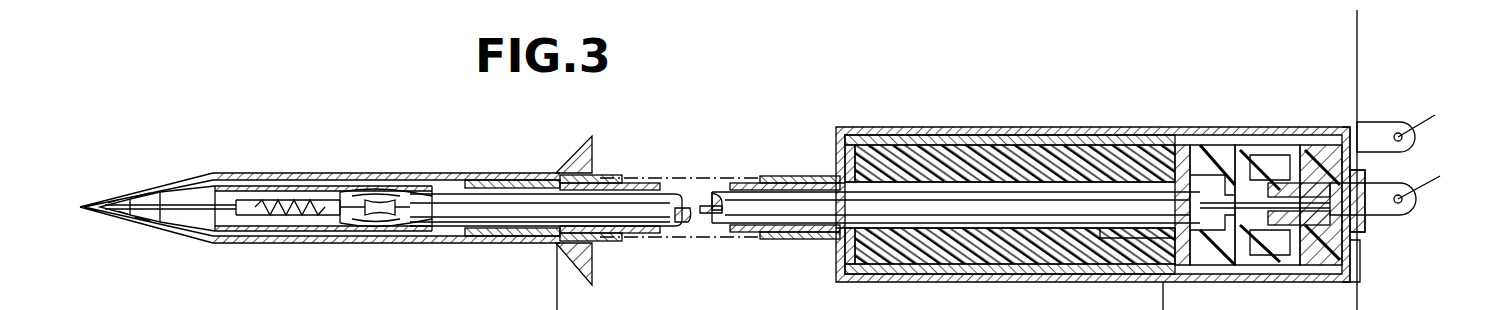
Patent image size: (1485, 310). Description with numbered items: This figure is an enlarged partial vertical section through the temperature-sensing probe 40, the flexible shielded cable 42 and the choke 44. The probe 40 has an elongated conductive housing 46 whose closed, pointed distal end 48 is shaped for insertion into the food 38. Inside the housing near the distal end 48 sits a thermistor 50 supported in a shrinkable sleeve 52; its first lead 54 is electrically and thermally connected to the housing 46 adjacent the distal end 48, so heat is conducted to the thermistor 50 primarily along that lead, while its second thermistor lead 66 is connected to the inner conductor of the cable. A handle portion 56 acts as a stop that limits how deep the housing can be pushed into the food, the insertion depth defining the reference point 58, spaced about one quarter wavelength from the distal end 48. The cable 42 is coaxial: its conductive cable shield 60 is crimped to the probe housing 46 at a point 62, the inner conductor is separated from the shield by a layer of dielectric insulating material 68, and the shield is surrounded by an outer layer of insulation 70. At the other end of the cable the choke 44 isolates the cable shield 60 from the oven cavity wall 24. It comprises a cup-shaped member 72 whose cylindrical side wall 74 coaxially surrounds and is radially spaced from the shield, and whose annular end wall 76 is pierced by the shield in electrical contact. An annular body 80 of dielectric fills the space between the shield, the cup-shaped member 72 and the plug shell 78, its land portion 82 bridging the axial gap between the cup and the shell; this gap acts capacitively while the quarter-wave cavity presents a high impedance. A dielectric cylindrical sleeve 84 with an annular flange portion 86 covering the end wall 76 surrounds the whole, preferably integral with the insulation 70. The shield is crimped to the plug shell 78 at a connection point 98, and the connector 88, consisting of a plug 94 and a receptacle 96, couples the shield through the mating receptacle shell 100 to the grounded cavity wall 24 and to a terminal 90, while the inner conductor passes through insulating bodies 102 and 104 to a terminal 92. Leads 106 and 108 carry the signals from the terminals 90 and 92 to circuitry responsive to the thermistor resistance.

The cavity wall 24 is at (1356, 62).
The food 38 is at (419, 5).
The probe 40 is at (274, 160).
The flexible shielded cable 42 is at (731, 165).
The choke 44 is at (1066, 189).
The conductive housing 46 is at (420, 172).
The distal end 48 is at (82, 205).
The thermistor 50 is at (318, 200).
The shrinkable sleeve 52 is at (233, 196).
The first lead 54 is at (170, 204).
The handle portion 56 is at (578, 145).
The reference point 58 is at (556, 252).
The cable shield 60 is at (662, 192).
The point 62 is at (498, 180).
The second thermistor lead 66 is at (352, 222).
The dielectric insulating material 68 is at (680, 224).
The layer of insulation 70 is at (616, 174).
The cup-shaped member 72 is at (900, 132).
The cylindrical side wall 74 is at (1010, 138).
The annular end wall 76 is at (835, 160).
The plug shell 78 is at (1212, 140).
The annular body 80 is at (962, 250).
The land portion 82 is at (1172, 140).
The cylindrical sleeve 84 is at (1100, 127).
The annular flange portion 86 is at (840, 258).
The connector 88 is at (1281, 126).
The terminal 90 is at (1372, 125).
The terminal 92 is at (1385, 216).
The plug 94 is at (1240, 118).
The receptacle 96 is at (1321, 118).
The connection point 98 is at (1120, 225).
The receptacle shell 100 is at (1295, 275).
The insulating body 102 is at (1230, 260).
The insulating body 104 is at (1355, 262).
The lead 106 is at (1432, 112).
The lead 108 is at (1440, 176).